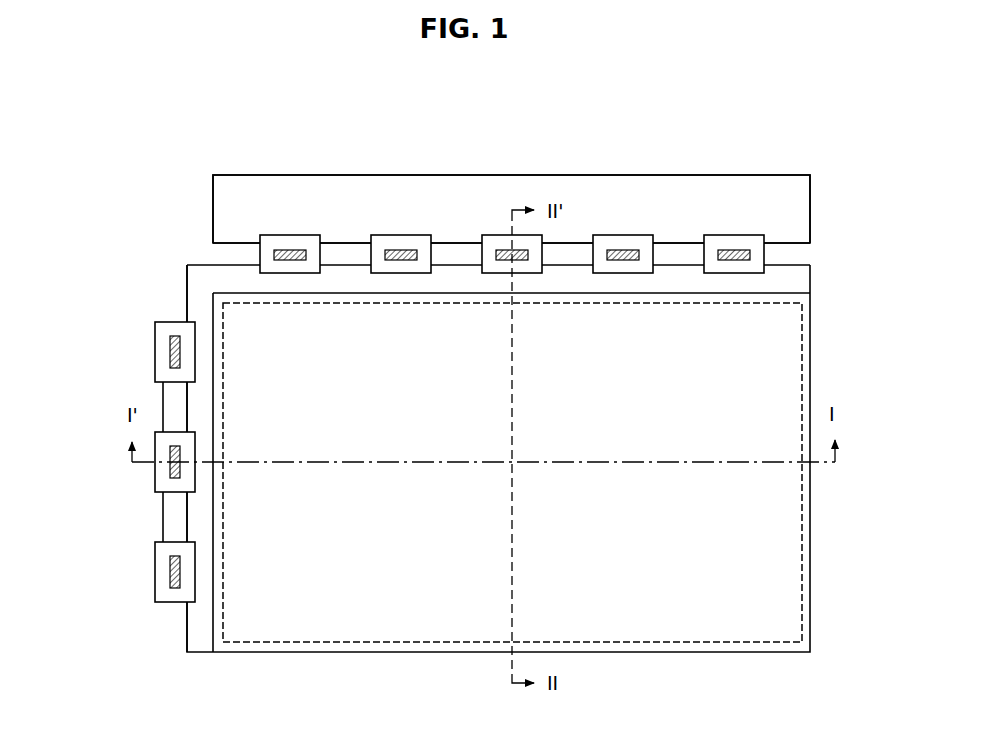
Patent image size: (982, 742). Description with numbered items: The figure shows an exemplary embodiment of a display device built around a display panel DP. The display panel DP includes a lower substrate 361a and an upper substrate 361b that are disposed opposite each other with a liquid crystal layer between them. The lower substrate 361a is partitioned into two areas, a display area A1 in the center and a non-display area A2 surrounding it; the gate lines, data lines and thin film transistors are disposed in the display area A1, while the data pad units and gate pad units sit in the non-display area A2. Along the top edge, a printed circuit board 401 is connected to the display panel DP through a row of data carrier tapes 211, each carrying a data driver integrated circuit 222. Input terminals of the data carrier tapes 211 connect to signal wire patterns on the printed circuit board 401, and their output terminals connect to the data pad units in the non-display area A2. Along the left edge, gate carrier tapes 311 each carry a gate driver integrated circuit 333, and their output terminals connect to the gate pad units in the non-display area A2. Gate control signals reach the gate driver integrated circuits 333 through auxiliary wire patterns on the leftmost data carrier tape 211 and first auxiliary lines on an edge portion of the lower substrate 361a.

The data carrier tape 211 is at (272, 242).
The data driver integrated circuit 222 is at (288, 248).
The printed circuit board 401 is at (457, 197).
The gate carrier tape 311 is at (175, 328).
The gate driver integrated circuit 333 is at (165, 352).
The lower substrate 361a is at (187, 609).
The upper substrate 361b is at (213, 636).
The display area A1 is at (780, 334).
The non-display area A2 is at (783, 274).
The display panel DP is at (102, 610).